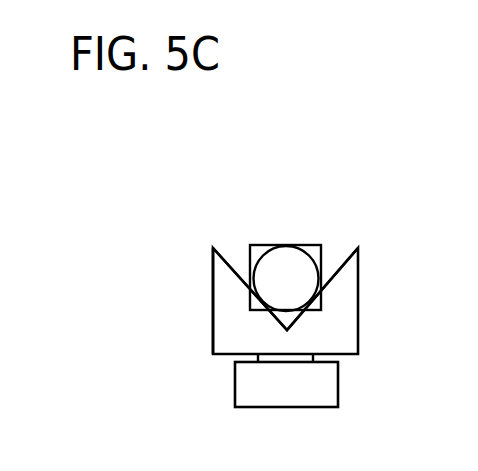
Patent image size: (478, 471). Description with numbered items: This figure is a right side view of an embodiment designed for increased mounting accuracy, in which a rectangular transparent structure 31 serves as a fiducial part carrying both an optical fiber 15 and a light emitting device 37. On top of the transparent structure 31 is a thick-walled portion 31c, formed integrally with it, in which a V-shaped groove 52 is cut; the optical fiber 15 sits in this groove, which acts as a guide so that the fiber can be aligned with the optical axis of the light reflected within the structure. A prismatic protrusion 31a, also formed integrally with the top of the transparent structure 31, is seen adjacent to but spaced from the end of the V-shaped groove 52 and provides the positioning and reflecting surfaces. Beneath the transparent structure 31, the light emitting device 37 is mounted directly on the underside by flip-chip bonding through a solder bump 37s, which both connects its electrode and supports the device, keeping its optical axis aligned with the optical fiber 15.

The optical fiber 15 is at (273, 265).
The transparent structure 31 is at (358, 297).
The prismatic protrusion 31a is at (318, 246).
The thick-walled portion 31c is at (213, 288).
The light emitting device 37 is at (338, 382).
The solder bump 37s is at (237, 358).
The V-shaped groove 52 is at (347, 263).